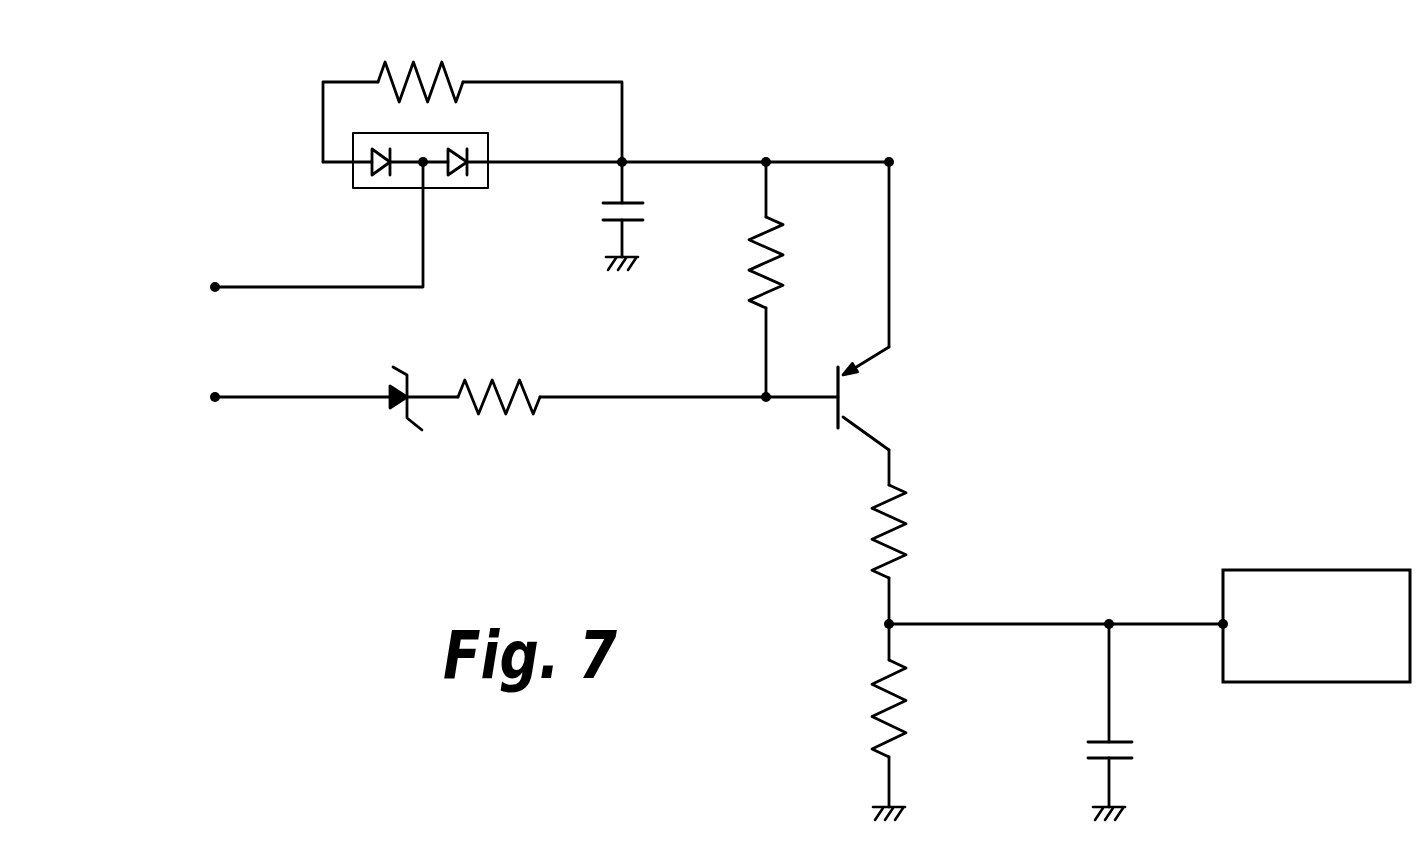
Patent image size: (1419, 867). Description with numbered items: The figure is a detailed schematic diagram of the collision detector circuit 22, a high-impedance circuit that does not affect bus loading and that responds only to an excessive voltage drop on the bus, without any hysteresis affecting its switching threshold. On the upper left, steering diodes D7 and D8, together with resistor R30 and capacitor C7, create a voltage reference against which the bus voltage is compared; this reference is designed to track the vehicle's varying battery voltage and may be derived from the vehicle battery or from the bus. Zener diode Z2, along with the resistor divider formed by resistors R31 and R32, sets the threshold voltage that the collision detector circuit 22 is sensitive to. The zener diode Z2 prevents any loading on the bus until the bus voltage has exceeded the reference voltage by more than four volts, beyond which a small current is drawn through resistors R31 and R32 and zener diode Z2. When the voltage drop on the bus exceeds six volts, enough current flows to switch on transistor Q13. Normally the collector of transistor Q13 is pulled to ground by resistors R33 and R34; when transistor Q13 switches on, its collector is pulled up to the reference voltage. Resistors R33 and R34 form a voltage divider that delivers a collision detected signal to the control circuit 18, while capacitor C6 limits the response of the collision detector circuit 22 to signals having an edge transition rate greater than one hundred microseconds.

The collision detector circuit 22 is at (673, 419).
The control circuit 18 is at (1288, 570).
The resistor R30 is at (420, 60).
The resistor R31 is at (803, 262).
The resistor R32 is at (499, 375).
The resistor R33 is at (859, 531).
The resistor R34 is at (859, 708).
The capacitor C6 is at (1082, 722).
The capacitor C7 is at (598, 216).
The steering diode D7 is at (379, 188).
The steering diode D8 is at (462, 188).
The transistor Q13 is at (882, 398).
The zener diode Z2 is at (401, 416).